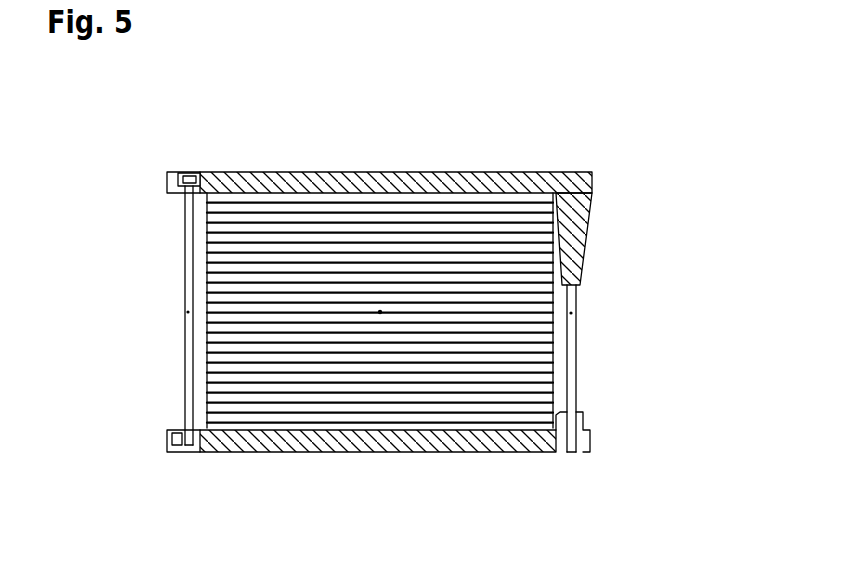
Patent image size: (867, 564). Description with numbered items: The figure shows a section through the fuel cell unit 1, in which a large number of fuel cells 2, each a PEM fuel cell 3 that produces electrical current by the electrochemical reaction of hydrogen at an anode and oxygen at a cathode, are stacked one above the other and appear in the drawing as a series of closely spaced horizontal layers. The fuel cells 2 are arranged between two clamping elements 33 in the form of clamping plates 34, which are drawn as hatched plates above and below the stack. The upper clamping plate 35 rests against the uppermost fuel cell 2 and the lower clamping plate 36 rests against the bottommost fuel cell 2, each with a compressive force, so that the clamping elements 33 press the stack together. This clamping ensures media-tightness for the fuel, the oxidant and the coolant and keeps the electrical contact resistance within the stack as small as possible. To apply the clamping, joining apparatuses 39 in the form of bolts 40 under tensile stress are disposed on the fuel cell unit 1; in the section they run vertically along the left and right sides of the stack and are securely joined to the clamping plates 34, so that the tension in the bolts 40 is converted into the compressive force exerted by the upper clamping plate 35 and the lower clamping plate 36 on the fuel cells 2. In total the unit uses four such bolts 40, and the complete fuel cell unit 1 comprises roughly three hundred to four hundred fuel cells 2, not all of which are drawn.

The fuel cell unit 1 is at (680, 120).
The fuel cell 2 is at (319, 310).
The PEM fuel cell 3 is at (216, 238).
The clamping element 33 is at (379, 312).
The clamping plate 34 is at (379, 312).
The upper clamping plate 35 is at (455, 172).
The lower clamping plate 36 is at (455, 452).
The joining apparatus 39 is at (377, 319).
The bolt 40 is at (184, 345).